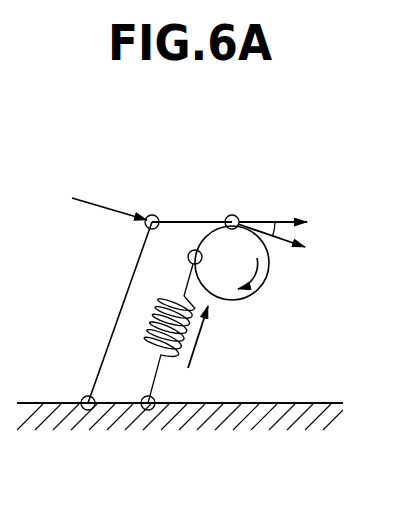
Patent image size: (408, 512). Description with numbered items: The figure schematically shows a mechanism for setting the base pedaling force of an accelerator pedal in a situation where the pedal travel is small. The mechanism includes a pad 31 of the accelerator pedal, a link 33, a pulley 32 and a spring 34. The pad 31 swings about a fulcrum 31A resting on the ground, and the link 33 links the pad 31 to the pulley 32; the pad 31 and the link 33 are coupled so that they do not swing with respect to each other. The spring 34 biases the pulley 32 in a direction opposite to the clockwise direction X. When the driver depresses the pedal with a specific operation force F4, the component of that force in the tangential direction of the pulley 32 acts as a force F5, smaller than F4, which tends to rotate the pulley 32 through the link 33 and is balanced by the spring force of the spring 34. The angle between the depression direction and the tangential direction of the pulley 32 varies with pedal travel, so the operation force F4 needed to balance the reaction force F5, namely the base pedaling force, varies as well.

The pad 31 is at (106, 350).
The fulcrum 31A is at (93, 409).
The pulley 32 is at (247, 297).
The link 33 is at (188, 220).
The spring 34 is at (163, 312).
The operation force F4 is at (286, 280).
The spring force F5 is at (252, 220).